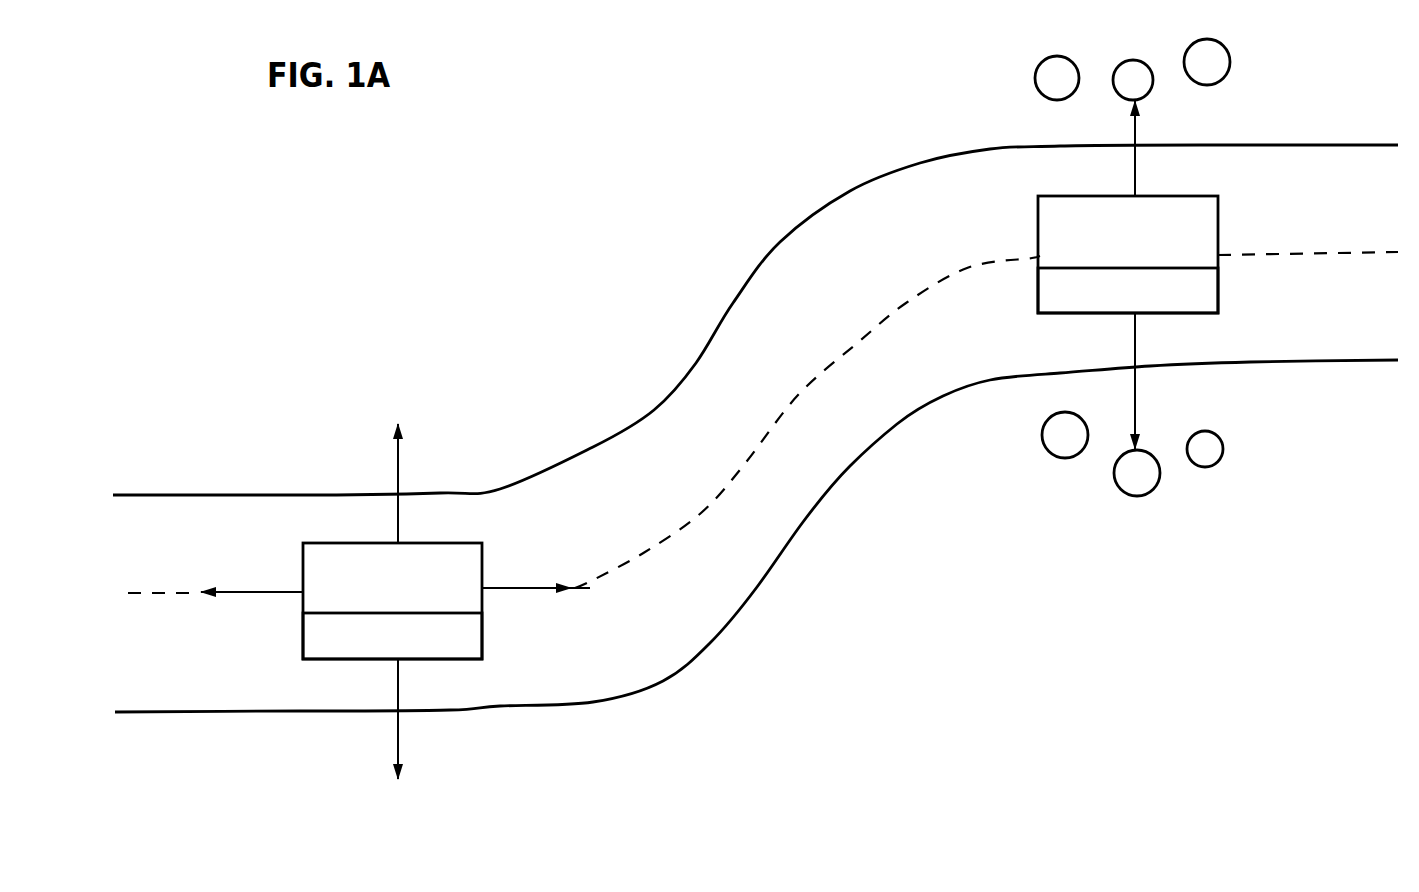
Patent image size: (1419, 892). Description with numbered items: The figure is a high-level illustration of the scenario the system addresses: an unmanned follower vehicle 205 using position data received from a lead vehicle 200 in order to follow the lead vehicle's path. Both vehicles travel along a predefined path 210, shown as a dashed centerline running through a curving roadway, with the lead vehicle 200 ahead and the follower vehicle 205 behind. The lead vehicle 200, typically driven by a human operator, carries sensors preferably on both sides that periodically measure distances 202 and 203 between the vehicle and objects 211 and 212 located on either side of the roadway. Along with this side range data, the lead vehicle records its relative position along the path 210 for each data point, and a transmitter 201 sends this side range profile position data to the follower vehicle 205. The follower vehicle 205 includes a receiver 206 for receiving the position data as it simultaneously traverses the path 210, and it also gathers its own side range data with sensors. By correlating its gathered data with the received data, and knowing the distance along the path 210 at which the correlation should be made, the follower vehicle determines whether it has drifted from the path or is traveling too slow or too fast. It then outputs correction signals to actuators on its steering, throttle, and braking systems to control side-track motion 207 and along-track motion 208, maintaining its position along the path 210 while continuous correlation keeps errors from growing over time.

The lead vehicle 200 is at (1218, 245).
The transmitter 201 is at (1218, 287).
The distance 202 is at (1135, 133).
The distance 203 is at (1137, 398).
The follower vehicle 205 is at (303, 570).
The receiver 206 is at (482, 637).
The side-track motion 207 is at (398, 470).
The along-track motion 208 is at (273, 592).
The predefined path 210 is at (799, 391).
The objects 211 is at (1187, 45).
The objects 212 is at (1203, 467).